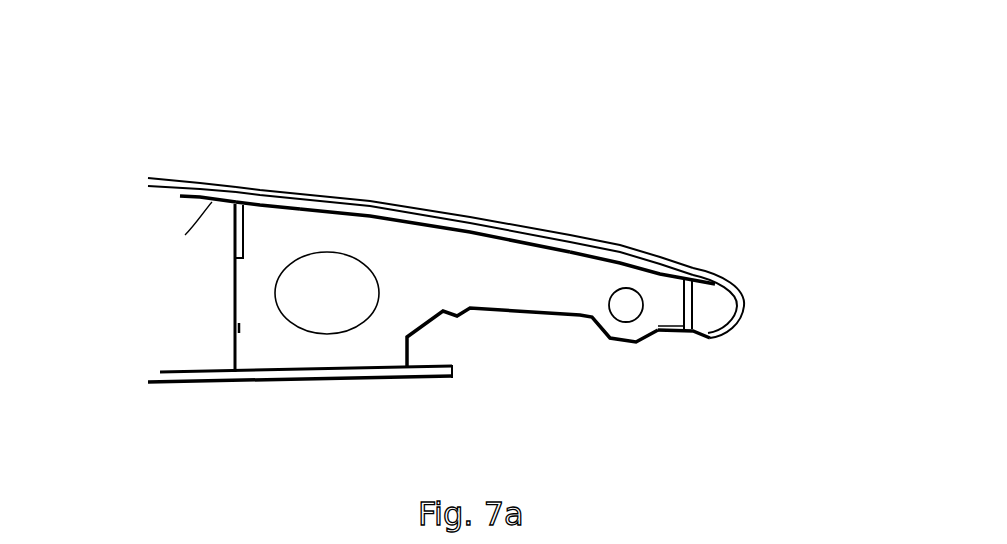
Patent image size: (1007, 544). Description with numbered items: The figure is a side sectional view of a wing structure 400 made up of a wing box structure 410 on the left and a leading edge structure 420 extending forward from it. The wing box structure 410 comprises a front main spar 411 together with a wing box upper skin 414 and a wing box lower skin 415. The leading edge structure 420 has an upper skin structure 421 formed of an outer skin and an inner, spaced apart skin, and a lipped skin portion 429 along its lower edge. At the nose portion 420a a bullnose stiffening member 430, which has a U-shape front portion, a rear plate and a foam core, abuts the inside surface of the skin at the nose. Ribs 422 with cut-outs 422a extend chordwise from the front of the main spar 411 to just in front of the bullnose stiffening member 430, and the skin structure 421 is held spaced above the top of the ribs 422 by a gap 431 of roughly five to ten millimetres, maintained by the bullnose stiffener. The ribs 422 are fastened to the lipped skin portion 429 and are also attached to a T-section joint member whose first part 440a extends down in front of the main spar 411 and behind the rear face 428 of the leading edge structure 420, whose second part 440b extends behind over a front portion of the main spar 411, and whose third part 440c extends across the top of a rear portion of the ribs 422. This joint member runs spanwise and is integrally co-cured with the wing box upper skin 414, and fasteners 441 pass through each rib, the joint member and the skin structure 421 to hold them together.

The wing structure 400 is at (490, 113).
The wing box structure 410 is at (230, 397).
The front main spar 411 is at (233, 316).
The wing box upper skin 414 is at (217, 185).
The wing box lower skin 415 is at (283, 381).
The leading edge structure 420 is at (742, 398).
The nose portion 420a is at (746, 309).
The upper skin structure 421 is at (528, 226).
The ribs 422 is at (460, 298).
The cut-outs 422a is at (626, 305).
The rear face 428 is at (233, 340).
The lipped skin portion 429 is at (729, 335).
The bullnose stiffening member 430 is at (716, 302).
The gap 431 is at (617, 250).
The first part 440a is at (233, 258).
The second part 440b is at (178, 209).
The third part 440c is at (260, 186).
The fasteners 441 is at (284, 188).